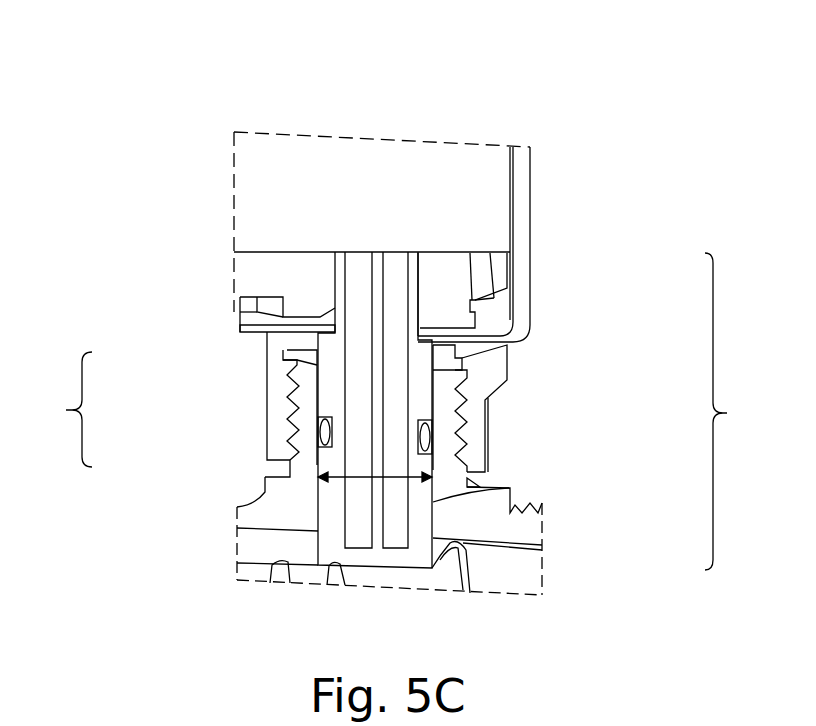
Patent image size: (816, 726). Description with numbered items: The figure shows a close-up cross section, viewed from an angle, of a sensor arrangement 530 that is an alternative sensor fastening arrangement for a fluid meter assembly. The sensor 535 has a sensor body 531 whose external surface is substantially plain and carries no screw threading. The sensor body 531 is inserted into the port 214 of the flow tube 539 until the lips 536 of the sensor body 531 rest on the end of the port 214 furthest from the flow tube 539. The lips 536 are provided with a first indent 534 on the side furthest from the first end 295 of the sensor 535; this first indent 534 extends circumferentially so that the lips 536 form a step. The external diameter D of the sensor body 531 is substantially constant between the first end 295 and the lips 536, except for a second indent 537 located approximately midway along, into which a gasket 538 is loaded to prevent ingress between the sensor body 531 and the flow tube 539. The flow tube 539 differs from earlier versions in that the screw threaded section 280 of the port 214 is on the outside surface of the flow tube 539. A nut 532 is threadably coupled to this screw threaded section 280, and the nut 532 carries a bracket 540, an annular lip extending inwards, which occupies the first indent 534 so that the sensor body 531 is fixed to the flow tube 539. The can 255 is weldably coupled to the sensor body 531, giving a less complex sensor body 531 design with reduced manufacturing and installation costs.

The sensor arrangement 530 is at (575, 47).
The can 255 is at (532, 233).
The bracket 540 is at (478, 338).
The first indent 534 is at (287, 350).
The nut 532 is at (267, 388).
The second indent 537 is at (323, 442).
The lips 536 is at (457, 358).
The gasket 538 is at (427, 427).
The port 214 is at (265, 492).
The external diameter D is at (347, 478).
The sensor body 531 is at (470, 481).
The flow tube 539 is at (550, 517).
The first end 295 is at (322, 565).
The screw threaded section 280 is at (54, 409).
The sensor 535 is at (741, 411).